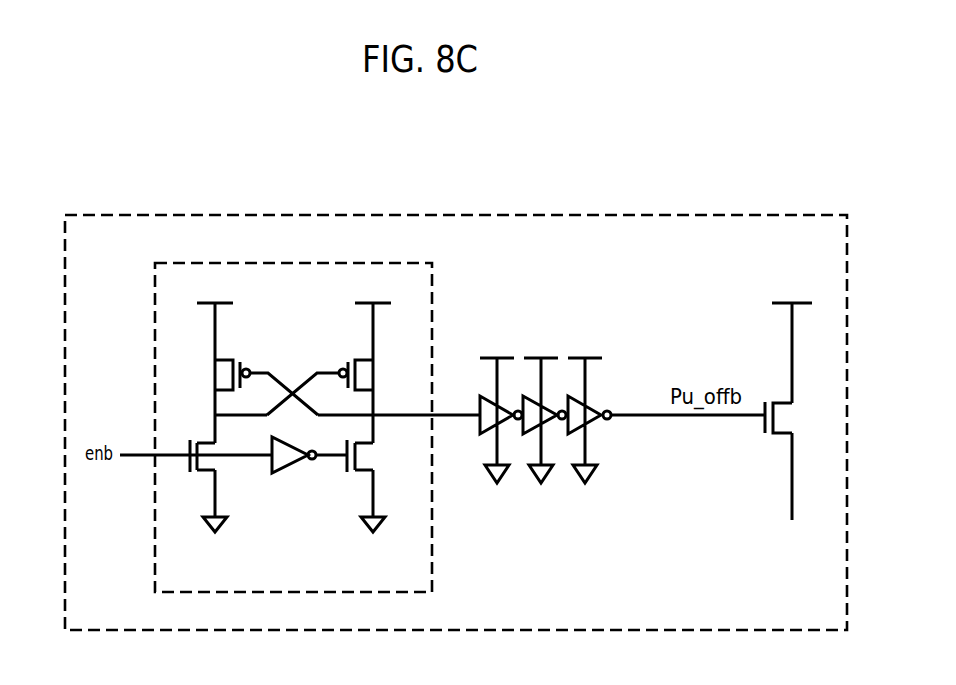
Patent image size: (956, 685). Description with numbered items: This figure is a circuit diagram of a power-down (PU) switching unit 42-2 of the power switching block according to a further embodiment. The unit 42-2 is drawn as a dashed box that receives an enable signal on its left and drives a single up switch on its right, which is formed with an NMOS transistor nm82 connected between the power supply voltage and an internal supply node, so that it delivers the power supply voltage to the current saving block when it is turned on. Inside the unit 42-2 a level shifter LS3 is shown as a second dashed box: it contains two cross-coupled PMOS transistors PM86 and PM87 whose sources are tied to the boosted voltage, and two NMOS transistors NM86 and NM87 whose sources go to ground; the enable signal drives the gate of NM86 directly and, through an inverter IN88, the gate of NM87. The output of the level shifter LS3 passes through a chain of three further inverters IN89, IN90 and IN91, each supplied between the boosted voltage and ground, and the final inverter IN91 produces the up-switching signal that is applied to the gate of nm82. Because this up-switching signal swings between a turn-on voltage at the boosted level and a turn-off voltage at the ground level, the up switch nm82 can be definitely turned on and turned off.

The PU switching unit 42-2 is at (712, 215).
The level shifter LS3 is at (357, 263).
The PMOS transistor PM86 is at (211, 360).
The PMOS transistor PM87 is at (377, 360).
The NMOS transistor NM86 is at (196, 502).
The NMOS transistor NM87 is at (381, 502).
The inverter IN88 is at (309, 470).
The inverter IN89 is at (487, 422).
The inverter IN90 is at (550, 422).
The inverter IN91 is at (598, 422).
The up switch NMOS transistor nm82 is at (797, 414).